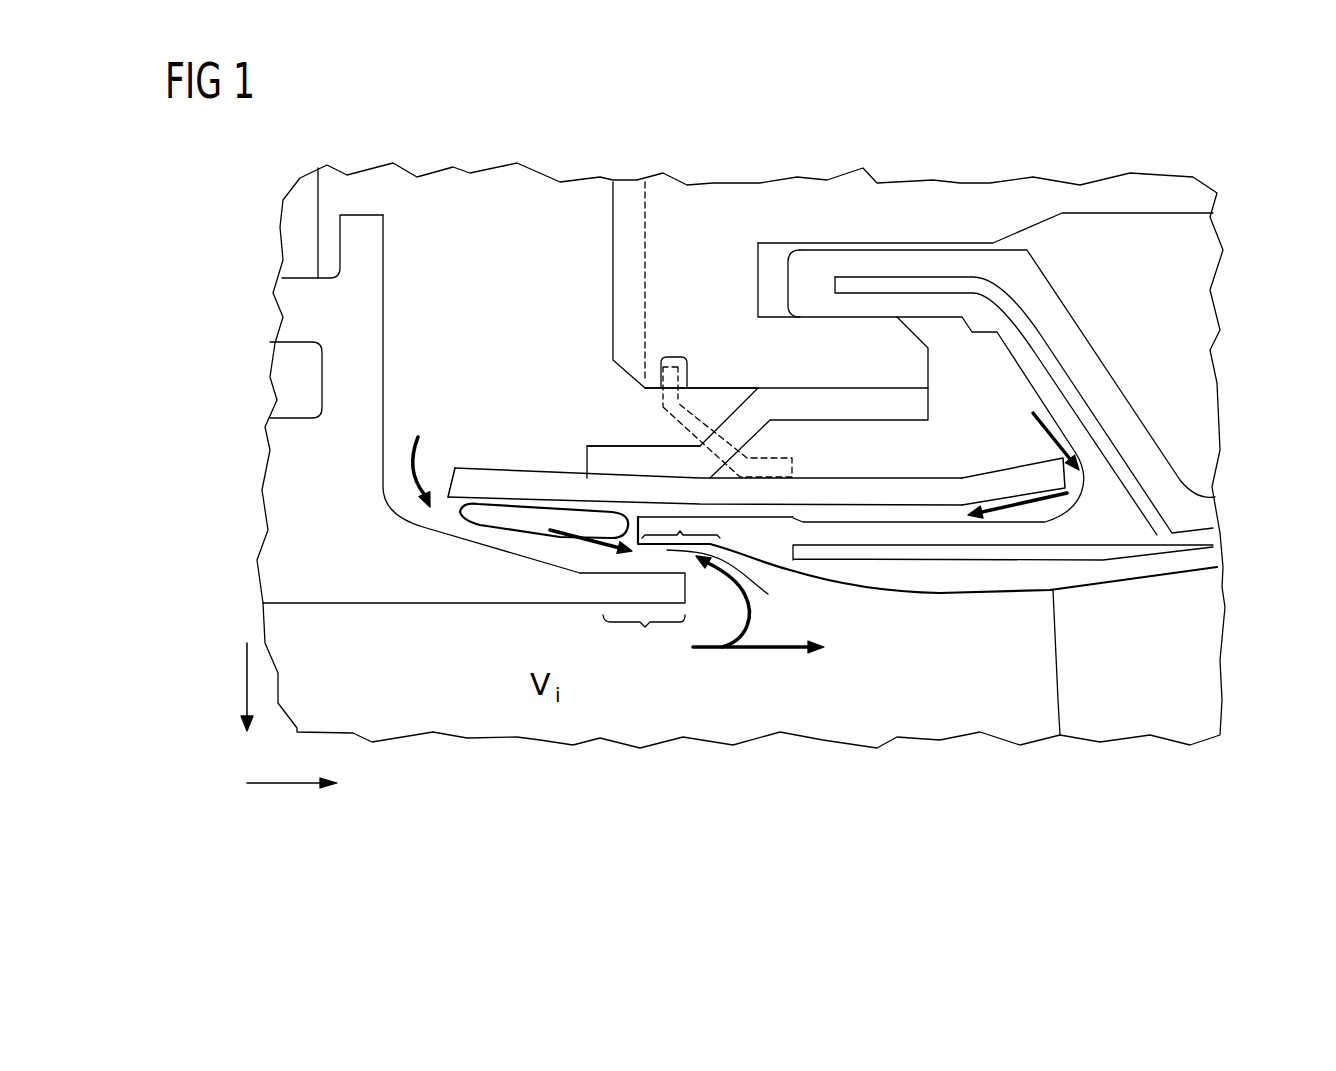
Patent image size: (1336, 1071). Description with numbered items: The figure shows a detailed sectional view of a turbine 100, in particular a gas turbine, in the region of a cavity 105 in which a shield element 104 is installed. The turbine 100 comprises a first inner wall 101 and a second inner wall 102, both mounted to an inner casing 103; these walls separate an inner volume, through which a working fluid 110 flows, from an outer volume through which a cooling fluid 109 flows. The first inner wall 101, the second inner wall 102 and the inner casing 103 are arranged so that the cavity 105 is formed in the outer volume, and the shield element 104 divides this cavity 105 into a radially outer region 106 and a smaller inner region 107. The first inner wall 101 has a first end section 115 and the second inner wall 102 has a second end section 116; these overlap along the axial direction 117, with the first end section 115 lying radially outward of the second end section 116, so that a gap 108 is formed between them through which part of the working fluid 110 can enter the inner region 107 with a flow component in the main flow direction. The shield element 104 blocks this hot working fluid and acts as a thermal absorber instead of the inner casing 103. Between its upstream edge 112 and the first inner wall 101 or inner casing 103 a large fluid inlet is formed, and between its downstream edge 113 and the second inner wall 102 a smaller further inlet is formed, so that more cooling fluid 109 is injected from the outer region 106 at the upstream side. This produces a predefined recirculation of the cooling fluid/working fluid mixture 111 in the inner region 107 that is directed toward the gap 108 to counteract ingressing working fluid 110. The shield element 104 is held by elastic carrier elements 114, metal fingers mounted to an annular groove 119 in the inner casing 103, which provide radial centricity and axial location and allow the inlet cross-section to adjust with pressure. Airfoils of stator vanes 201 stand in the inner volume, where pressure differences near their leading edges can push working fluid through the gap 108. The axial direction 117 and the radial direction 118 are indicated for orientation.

The turbine 100 is at (1140, 139).
The first inner wall 101 is at (357, 593).
The second inner wall 102 is at (950, 585).
The inner casing 103 is at (712, 194).
The shield element 104 is at (572, 490).
The cavity 105 is at (488, 186).
The outer region 106 is at (530, 457).
The inner region 107 is at (502, 523).
The gap 108 is at (737, 579).
The cooling fluid 109 is at (429, 428).
The working fluid 110 is at (703, 649).
The cooling fluid/working fluid mixture 111 is at (543, 545).
The upstream edge 112 is at (449, 485).
The downstream edge 113 is at (1063, 472).
The carrier elements 114 is at (661, 405).
The first end section 115 is at (644, 639).
The second end section 116 is at (680, 531).
The axial direction 117 is at (290, 784).
The radial direction 118 is at (246, 686).
The groove 119 is at (668, 356).
The stator vanes 201 is at (1175, 632).